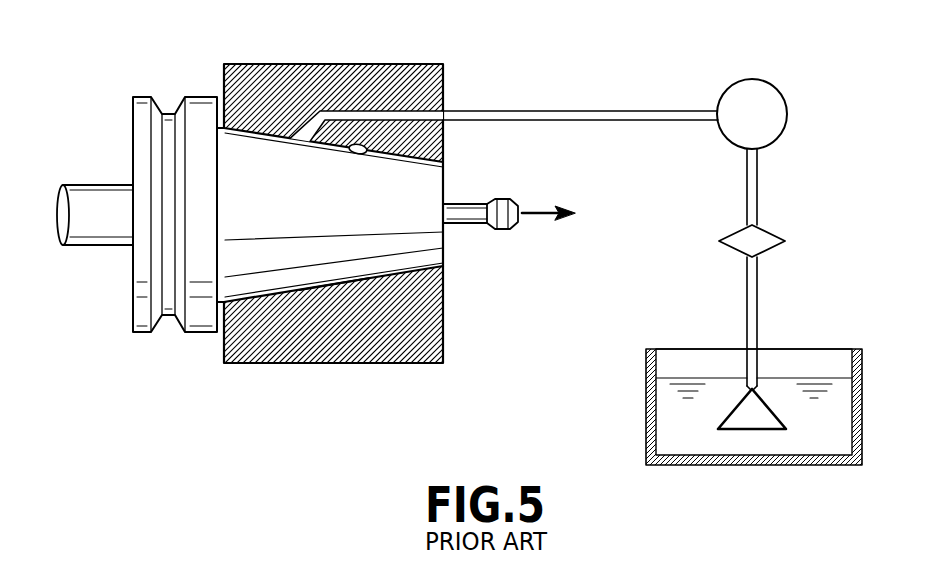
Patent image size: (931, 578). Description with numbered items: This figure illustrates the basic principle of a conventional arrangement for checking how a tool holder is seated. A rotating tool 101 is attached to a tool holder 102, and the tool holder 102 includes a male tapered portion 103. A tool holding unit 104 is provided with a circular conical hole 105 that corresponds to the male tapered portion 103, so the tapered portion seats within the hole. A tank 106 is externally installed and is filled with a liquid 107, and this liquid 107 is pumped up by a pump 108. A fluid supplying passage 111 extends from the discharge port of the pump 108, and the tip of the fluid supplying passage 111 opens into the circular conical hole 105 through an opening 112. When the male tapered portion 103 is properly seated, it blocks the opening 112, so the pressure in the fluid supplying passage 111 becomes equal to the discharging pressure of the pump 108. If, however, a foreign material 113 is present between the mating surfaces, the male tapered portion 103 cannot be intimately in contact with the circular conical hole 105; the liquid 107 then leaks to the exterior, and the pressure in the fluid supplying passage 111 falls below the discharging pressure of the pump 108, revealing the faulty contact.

The rotating tool 101 is at (107, 230).
The tool holder 102 is at (145, 320).
The male tapered portion 103 is at (293, 257).
The tool holding unit 104 is at (403, 363).
The circular conical hole 105 is at (323, 284).
The tank 106 is at (752, 467).
The liquid 107 is at (690, 380).
The pump 108 is at (775, 88).
The fluid supplying passage 111 is at (403, 111).
The opening 112 is at (295, 140).
The foreign material 113 is at (358, 154).